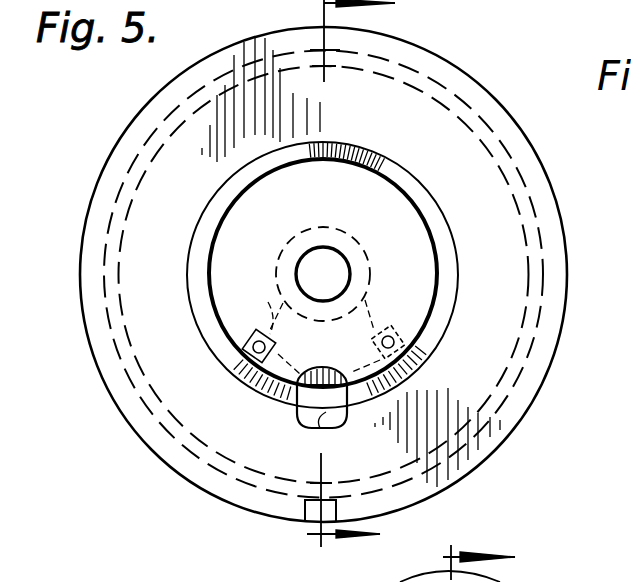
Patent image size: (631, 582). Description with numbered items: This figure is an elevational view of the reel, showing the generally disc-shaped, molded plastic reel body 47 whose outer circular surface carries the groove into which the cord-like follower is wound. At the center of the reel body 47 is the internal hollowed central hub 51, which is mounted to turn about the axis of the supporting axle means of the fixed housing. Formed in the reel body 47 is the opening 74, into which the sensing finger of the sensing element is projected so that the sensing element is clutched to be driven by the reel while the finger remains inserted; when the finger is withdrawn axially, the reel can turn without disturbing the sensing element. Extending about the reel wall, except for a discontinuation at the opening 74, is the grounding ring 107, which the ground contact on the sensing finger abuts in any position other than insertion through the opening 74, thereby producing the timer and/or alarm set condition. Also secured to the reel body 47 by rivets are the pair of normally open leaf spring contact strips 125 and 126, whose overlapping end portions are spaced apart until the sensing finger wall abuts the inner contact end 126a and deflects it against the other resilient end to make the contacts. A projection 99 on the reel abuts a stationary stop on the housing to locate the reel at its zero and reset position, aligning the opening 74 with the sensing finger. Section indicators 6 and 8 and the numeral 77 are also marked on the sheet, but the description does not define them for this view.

The reel body 47 is at (556, 173).
The grounding ring 107 is at (445, 300).
The central hub 51 is at (344, 182).
The opening 74 is at (320, 424).
The overlapping end portion 126a is at (338, 352).
The leaf spring contact strip 126 is at (258, 327).
The leaf spring contact strip 125 is at (370, 324).
The projection 99 is at (305, 510).
The section line 6 is at (336, 291).
The section line 8 is at (479, 550).
The adjacent figure element 77 is at (540, 581).